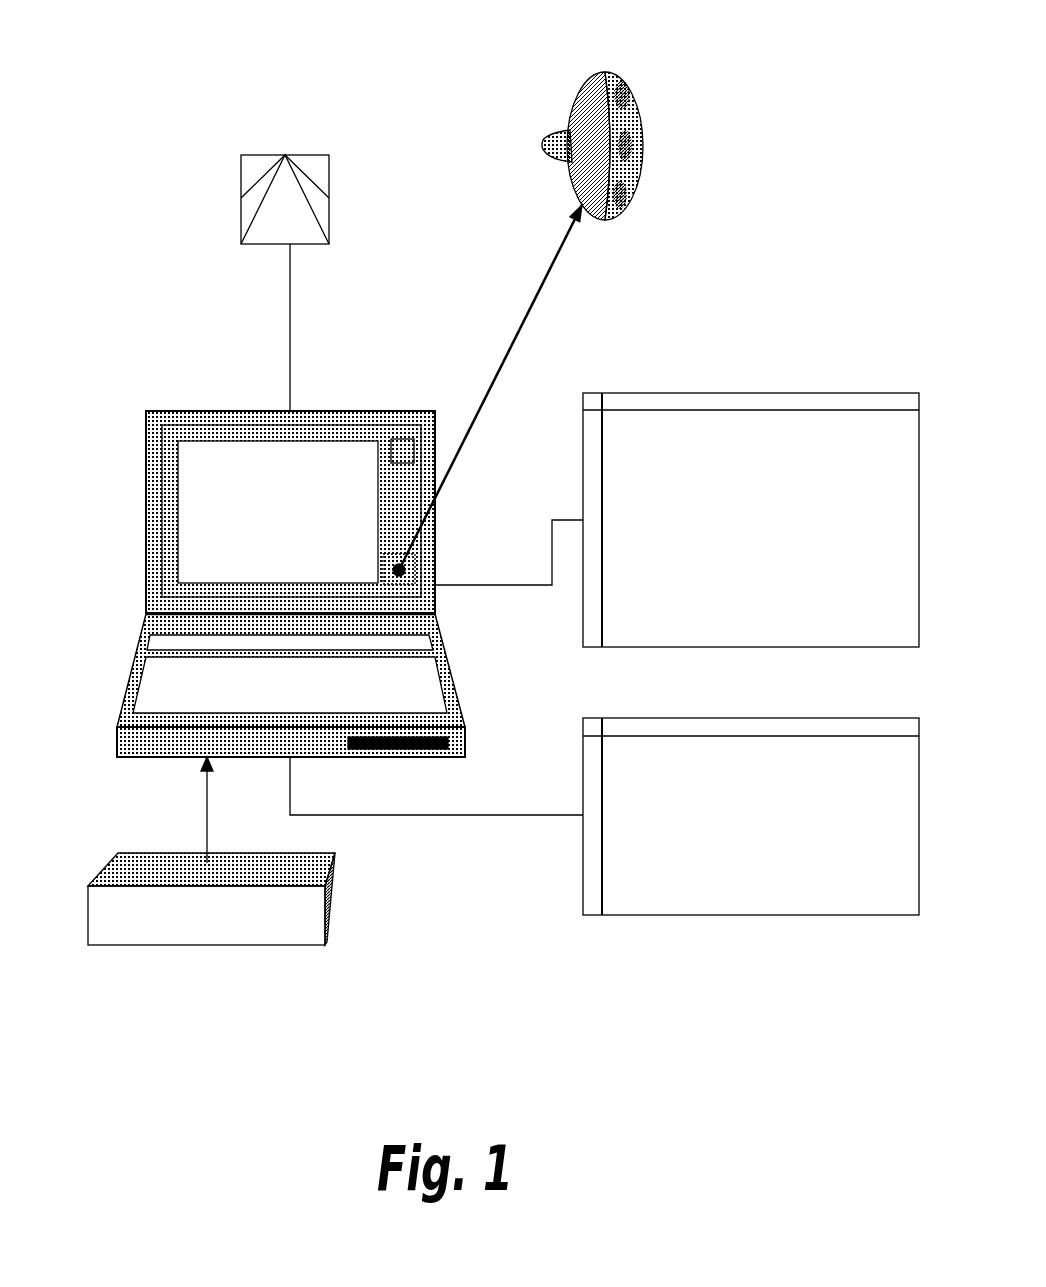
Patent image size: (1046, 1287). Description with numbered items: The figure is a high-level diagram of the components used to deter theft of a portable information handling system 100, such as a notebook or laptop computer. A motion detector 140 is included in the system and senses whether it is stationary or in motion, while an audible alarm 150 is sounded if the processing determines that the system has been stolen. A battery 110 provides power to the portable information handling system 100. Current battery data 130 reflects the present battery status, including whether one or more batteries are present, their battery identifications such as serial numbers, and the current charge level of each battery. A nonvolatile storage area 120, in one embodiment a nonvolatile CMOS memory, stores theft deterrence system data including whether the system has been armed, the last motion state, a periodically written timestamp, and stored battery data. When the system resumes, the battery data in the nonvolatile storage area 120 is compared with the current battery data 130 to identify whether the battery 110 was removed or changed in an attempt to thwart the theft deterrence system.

The portable information handling system 100 is at (280, 538).
The battery 110 is at (211, 944).
The nonvolatile storage area 120 is at (785, 637).
The current battery data 130 is at (785, 898).
The motion detector 140 is at (223, 184).
The audible alarm 150 is at (655, 127).